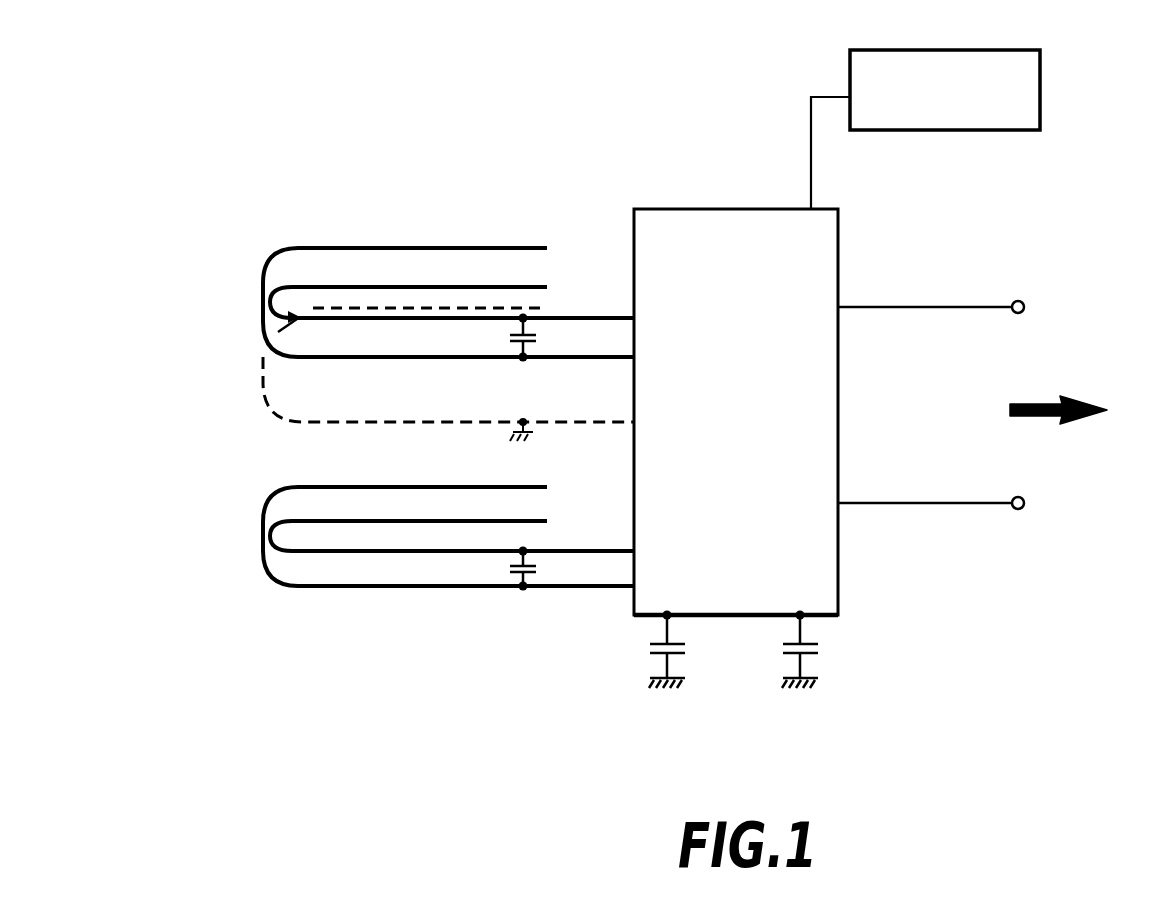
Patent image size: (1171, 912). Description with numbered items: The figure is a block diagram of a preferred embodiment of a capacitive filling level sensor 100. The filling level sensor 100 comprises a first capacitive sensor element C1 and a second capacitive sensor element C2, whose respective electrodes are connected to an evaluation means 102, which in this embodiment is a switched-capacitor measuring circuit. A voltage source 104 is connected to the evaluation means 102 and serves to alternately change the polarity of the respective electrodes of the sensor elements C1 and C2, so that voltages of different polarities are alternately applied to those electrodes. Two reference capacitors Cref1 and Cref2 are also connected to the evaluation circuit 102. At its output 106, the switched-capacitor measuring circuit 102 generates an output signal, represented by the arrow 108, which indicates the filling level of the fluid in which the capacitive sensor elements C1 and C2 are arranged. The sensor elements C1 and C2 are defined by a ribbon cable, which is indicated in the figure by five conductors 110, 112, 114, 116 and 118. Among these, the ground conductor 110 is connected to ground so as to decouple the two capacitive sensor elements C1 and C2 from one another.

The capacitive filling level sensor 100 is at (258, 672).
The evaluation means 102 is at (838, 575).
The voltage source 104 is at (1040, 100).
The output 106 is at (994, 347).
The output signal 108 is at (1052, 415).
The ground conductor 110 is at (400, 445).
The conductor 112 is at (352, 248).
The conductor 114 is at (478, 287).
The conductor 116 is at (393, 590).
The conductor 118 is at (322, 555).
The first capacitive sensor element C1 is at (510, 352).
The second capacitive sensor element C2 is at (510, 588).
The reference capacitor Cref1 is at (650, 652).
The reference capacitor Cref2 is at (820, 650).